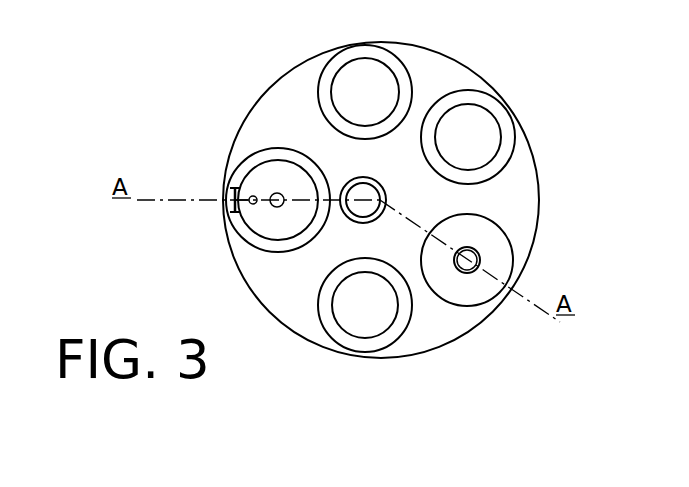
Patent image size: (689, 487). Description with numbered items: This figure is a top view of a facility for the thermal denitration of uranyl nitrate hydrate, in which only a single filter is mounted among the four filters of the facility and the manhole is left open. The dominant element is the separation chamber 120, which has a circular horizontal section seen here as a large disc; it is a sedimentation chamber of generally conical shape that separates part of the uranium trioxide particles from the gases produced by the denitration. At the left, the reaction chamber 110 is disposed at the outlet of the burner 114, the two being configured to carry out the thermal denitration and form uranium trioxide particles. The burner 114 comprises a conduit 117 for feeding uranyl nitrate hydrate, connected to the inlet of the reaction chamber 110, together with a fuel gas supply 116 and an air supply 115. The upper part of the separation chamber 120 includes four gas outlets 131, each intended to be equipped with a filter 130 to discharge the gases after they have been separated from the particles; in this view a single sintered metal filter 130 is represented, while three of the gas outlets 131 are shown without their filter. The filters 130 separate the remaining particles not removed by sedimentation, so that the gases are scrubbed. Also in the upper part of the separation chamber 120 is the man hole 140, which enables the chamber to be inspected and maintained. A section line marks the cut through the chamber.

The reaction chamber 110 is at (280, 148).
The burner 114 is at (276, 178).
The air supply 115 is at (233, 213).
The fuel gas supply 116 is at (253, 195).
The conduit 117 is at (275, 208).
The separation chamber 120 is at (432, 312).
The filter 130 is at (498, 250).
The gas outlet 131 is at (378, 77).
The man hole 140 is at (353, 192).